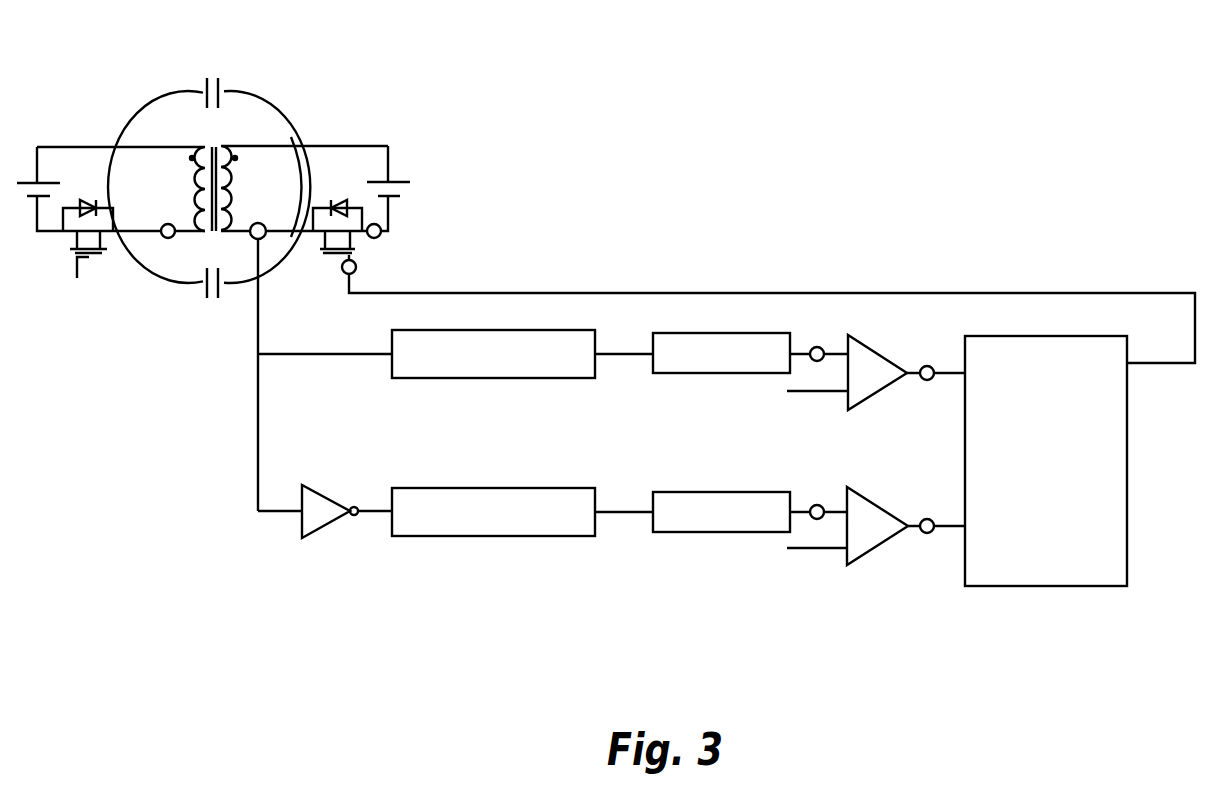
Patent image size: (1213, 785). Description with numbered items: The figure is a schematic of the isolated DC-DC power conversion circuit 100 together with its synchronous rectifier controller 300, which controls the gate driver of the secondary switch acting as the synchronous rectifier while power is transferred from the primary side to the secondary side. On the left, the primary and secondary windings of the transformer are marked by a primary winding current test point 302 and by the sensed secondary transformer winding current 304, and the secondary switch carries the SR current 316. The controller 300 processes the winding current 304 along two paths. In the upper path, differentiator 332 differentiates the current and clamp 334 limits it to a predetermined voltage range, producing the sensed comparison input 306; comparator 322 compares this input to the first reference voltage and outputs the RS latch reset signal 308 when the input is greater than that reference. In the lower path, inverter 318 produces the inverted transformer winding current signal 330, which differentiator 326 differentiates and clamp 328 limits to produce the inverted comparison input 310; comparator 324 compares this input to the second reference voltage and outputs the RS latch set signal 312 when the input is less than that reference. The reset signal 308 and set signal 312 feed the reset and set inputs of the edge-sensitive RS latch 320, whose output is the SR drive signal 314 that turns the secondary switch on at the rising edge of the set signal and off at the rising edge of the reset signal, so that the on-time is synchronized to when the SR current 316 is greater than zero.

The isolated DC-DC power conversion circuit 100 is at (70, 95).
The synchronous rectifier controller 300 is at (935, 211).
The primary winding current test point 302 is at (162, 235).
The secondary transformer winding current 304 is at (254, 223).
The sensed comparison input 306 is at (815, 348).
The RS latch reset signal 308 is at (925, 366).
The inverted comparison input 310 is at (817, 505).
The RS latch set signal 312 is at (925, 519).
The SR drive signal 314 is at (341, 269).
The SR current 316 is at (378, 236).
The inverter 318 is at (306, 487).
The edge-sensitive RS latch 320 is at (1062, 447).
The comparator 322 is at (866, 346).
The comparator 324 is at (861, 495).
The differentiator 326 is at (394, 537).
The clamp 328 is at (654, 533).
The inverted transformer winding current signal 330 is at (366, 510).
The differentiator 332 is at (394, 379).
The clamp 334 is at (654, 374).